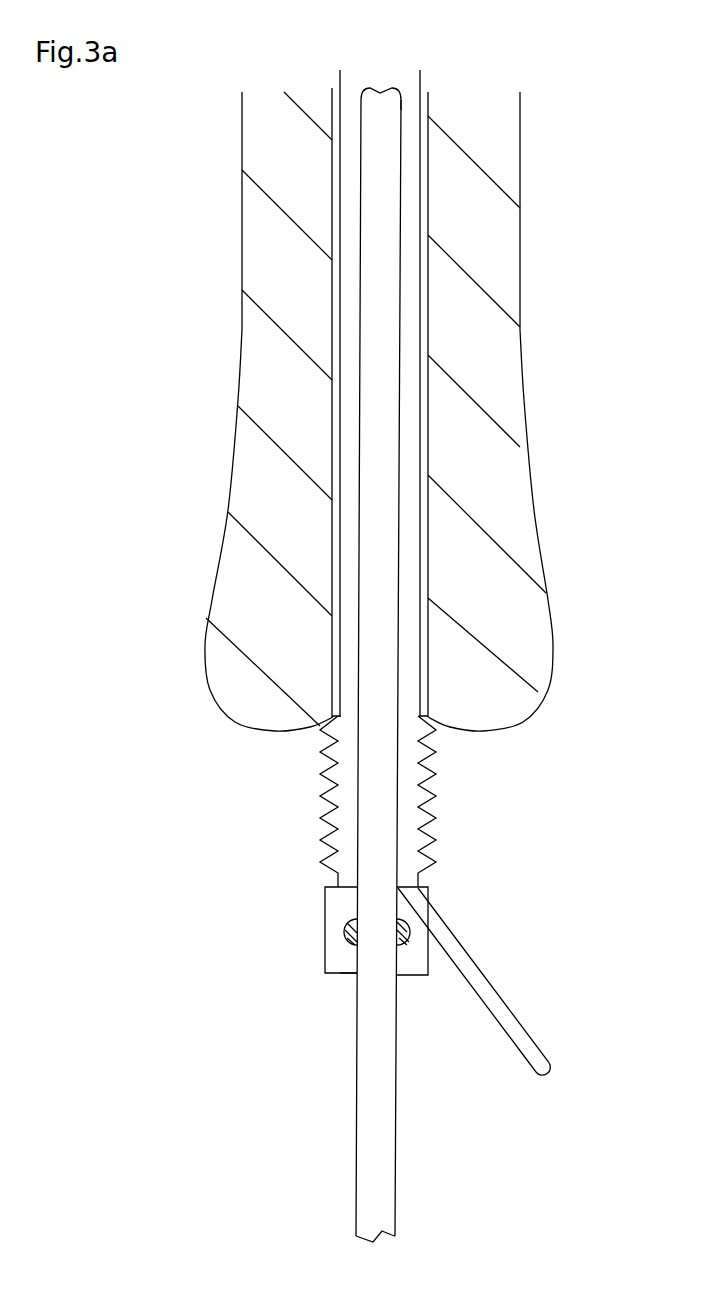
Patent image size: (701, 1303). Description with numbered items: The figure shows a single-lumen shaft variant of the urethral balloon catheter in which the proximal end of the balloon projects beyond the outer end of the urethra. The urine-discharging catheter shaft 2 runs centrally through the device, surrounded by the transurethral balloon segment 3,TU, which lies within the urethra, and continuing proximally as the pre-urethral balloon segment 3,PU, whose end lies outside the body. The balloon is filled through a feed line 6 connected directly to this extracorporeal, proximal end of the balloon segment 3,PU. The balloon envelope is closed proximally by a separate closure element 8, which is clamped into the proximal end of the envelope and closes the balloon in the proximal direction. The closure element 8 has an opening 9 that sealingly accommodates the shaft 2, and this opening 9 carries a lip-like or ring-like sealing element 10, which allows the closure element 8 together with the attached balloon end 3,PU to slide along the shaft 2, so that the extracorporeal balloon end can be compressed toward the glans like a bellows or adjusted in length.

The catheter shaft 2 is at (383, 128).
The transurethral balloon segment 3,TU is at (408, 272).
The pre-urethral balloon segment 3,PU is at (436, 785).
The feed line 6 is at (487, 985).
The closure element 8 is at (325, 888).
The opening 9 is at (357, 972).
The sealing element 10 is at (344, 930).